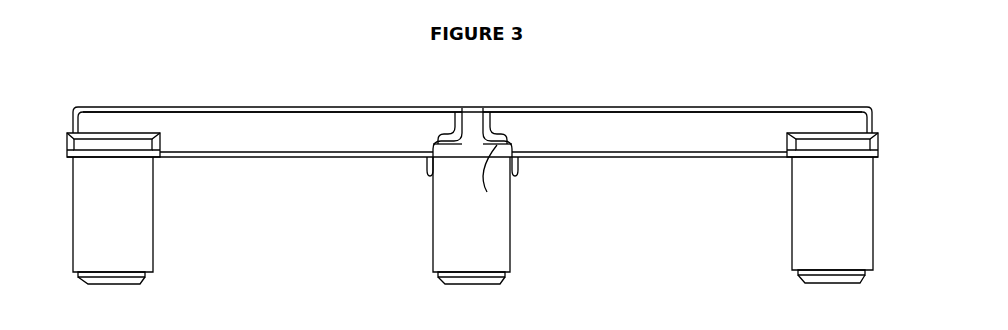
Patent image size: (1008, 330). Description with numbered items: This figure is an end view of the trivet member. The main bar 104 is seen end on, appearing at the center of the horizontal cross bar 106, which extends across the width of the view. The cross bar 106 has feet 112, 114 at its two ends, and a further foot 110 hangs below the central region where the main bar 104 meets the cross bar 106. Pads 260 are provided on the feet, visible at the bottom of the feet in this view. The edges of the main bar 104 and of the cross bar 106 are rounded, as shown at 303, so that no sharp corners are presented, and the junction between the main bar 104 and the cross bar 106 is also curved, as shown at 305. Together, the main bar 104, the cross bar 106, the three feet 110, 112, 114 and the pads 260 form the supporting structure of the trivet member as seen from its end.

The main bar 104 is at (463, 113).
The cross bar 106 is at (253, 125).
The foot 110 is at (463, 210).
The foot 112 is at (140, 218).
The foot 114 is at (803, 235).
The pads 260 is at (130, 283).
The rounded edges 303 is at (490, 110).
The curved junction 305 is at (487, 192).